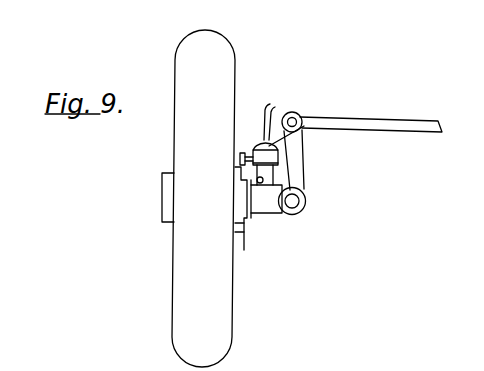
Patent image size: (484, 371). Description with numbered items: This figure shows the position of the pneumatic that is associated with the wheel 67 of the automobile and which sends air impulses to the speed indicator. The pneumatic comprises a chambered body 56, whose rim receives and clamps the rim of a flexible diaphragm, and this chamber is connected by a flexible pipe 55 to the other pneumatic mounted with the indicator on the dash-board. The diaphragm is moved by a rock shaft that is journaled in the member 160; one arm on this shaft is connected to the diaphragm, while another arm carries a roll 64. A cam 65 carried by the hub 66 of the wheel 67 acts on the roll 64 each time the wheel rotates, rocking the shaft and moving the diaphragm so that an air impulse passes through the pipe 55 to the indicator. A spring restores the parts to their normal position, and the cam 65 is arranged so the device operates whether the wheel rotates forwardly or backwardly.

The flexible pipe 55 is at (271, 106).
The chambered body 56 is at (300, 117).
The roll 64 is at (247, 150).
The cam 65 is at (244, 250).
The hub 66 is at (247, 212).
The wheel 67 is at (190, 248).
The member 160 is at (278, 168).